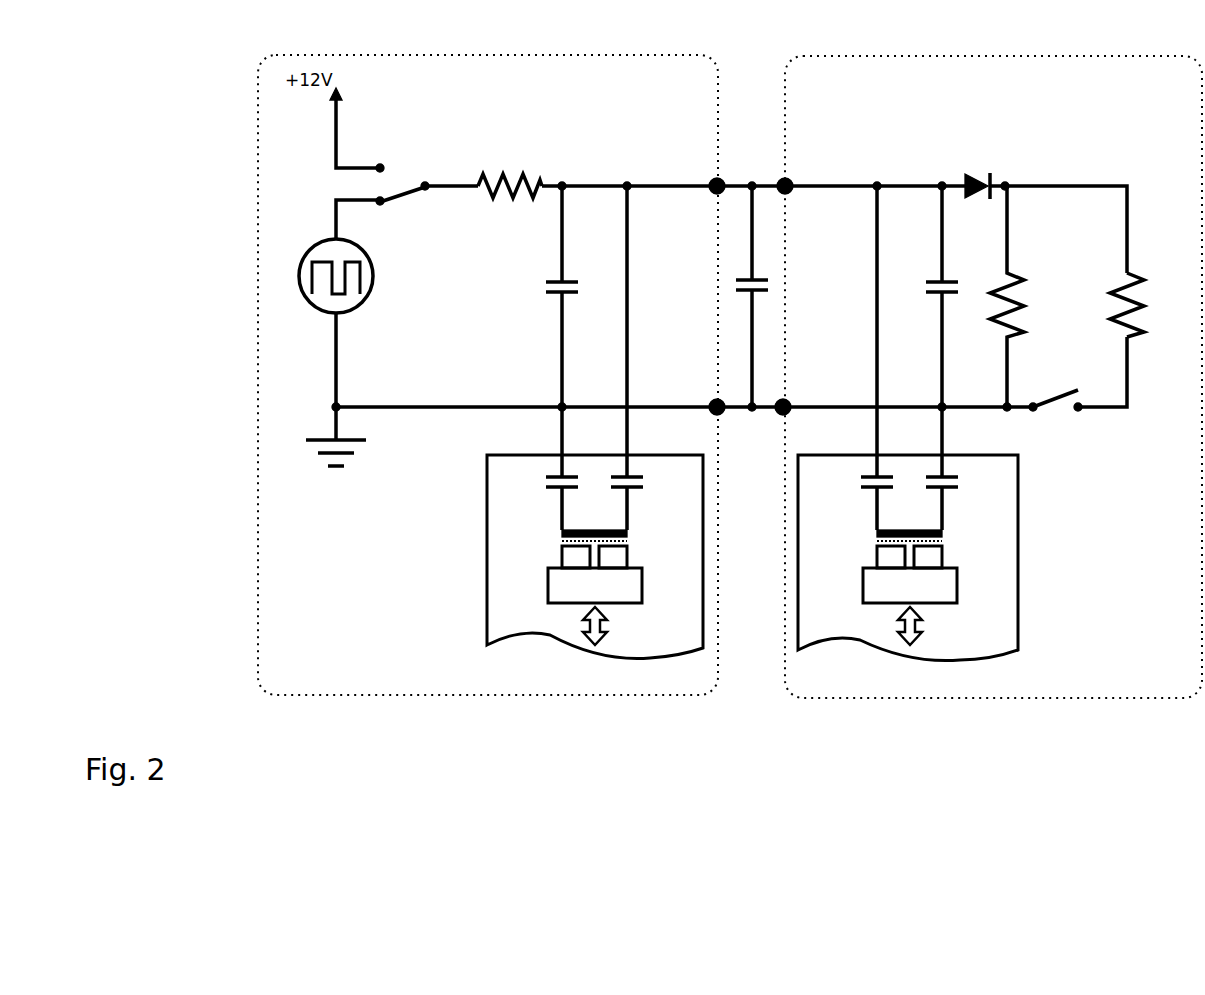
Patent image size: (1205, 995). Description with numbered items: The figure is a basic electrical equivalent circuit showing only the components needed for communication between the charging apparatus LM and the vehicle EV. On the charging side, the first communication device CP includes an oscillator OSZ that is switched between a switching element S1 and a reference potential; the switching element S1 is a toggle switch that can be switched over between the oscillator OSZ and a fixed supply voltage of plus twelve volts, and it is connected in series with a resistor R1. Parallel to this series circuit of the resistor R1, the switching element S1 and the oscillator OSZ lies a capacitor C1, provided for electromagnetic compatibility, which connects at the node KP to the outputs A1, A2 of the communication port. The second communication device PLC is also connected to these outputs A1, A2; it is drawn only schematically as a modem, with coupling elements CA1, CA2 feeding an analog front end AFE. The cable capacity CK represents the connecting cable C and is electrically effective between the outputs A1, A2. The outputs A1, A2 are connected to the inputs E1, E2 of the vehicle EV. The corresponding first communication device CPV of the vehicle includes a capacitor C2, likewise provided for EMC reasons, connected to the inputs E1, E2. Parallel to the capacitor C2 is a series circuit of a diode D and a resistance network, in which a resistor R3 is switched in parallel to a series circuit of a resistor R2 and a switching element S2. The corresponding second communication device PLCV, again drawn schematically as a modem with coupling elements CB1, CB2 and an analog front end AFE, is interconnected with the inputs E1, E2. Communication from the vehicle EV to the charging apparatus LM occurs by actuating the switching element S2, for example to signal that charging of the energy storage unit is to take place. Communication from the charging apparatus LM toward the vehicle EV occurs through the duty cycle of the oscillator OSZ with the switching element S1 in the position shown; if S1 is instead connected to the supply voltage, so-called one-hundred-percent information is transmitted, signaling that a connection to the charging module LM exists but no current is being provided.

The charging apparatus LM is at (432, 697).
The vehicle EV is at (1125, 698).
The first communication device CP is at (598, 127).
The corresponding first communication device CPV is at (976, 125).
The oscillator OSZ is at (299, 268).
The switching element S1 is at (402, 173).
The resistor R1 is at (510, 158).
The contact point KP is at (627, 182).
The output A1 is at (718, 182).
The input E1 is at (786, 182).
The output A2 is at (717, 415).
The input E2 is at (783, 415).
The capacitor C1 is at (545, 318).
The cable capacity CK is at (750, 272).
The capacitor C2 is at (925, 318).
The diode D is at (987, 204).
The resistor R3 is at (1028, 302).
The resistor R2 is at (1145, 300).
The switching element S2 is at (1055, 390).
The second communication device PLC is at (522, 478).
The coupling capacitor A1 CA1 is at (541, 492).
The coupling capacitor A2 CA2 is at (646, 358).
The analog front end AFE is at (595, 585).
The corresponding second communication device PLCV is at (930, 480).
The coupling capacitor B1 CB1 is at (856, 358).
The coupling capacitor B2 CB2 is at (961, 492).
The cable C is at (752, 645).